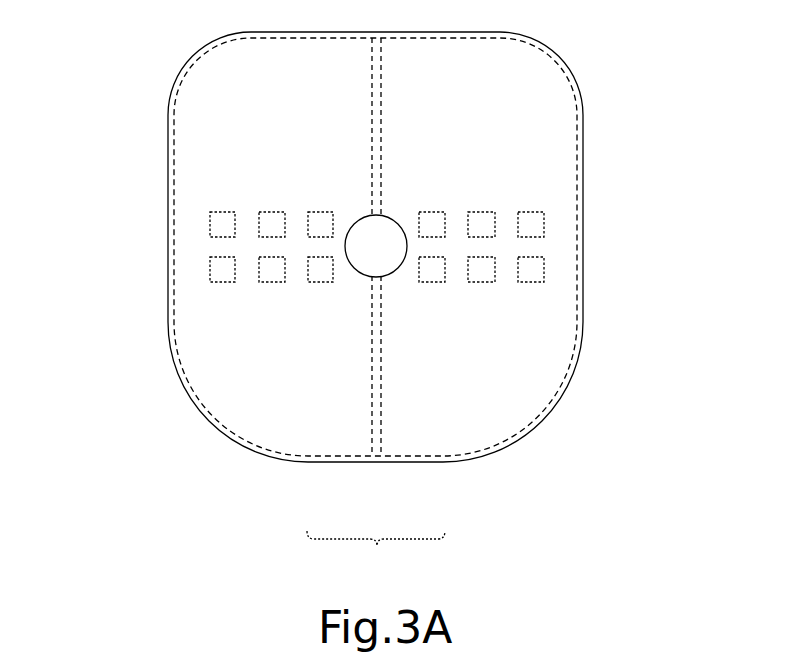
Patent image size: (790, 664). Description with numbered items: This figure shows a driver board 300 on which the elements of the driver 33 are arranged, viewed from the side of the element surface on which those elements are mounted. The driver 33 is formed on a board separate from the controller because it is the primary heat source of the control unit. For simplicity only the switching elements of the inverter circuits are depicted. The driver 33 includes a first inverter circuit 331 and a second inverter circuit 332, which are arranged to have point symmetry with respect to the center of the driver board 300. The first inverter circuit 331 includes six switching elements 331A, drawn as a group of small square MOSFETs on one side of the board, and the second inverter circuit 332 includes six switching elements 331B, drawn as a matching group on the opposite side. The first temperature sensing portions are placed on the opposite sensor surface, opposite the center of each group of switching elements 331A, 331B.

The driver board 300 is at (558, 60).
The driver 33 is at (376, 553).
The first inverter circuit 331 is at (332, 461).
The second inverter circuit 332 is at (425, 461).
The switching elements 331A is at (318, 258).
The switching elements 331B is at (433, 237).